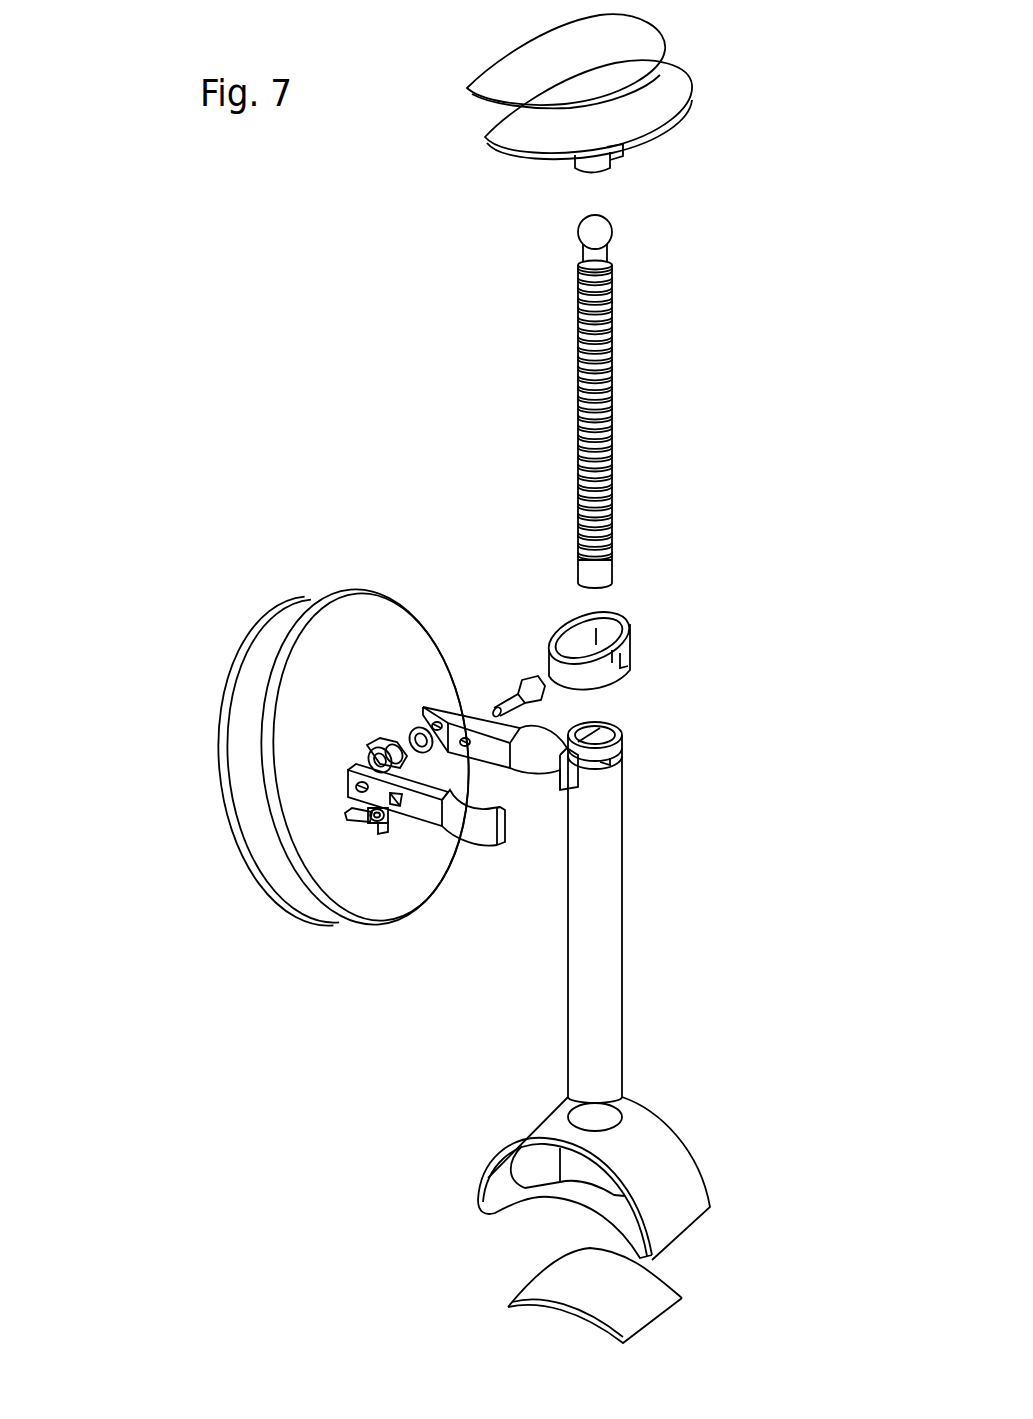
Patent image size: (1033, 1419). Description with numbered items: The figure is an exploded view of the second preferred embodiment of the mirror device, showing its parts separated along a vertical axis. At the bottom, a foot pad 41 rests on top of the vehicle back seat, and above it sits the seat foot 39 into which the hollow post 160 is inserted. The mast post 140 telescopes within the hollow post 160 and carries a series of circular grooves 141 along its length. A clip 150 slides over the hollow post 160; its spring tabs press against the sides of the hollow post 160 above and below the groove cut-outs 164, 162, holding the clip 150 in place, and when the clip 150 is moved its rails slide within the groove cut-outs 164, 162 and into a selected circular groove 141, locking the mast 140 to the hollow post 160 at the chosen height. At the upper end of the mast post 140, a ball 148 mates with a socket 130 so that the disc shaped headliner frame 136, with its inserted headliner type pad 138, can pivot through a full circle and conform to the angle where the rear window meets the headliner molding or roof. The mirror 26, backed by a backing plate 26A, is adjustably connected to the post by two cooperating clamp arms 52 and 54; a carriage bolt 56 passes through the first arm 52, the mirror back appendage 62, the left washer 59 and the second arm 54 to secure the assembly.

The headliner type pad 138 is at (630, 50).
The headliner frame 136 is at (745, 72).
The socket 130 is at (707, 147).
The ball 148 is at (605, 232).
The mast post 140 is at (612, 378).
The circular groove 141 is at (745, 452).
The clip 150 is at (670, 628).
The groove cut-out 164 is at (615, 727).
The groove cut-out 162 is at (603, 765).
The hollow post 160 is at (600, 898).
The seat foot 39 is at (687, 1182).
The foot pad 41 is at (636, 1293).
The mirror 26 is at (228, 745).
The backing plate 26A is at (385, 638).
The carriage bolt 56 is at (505, 690).
The left washer 59 is at (410, 729).
The mirror back appendage 62 is at (373, 742).
The second clamp arm 54 is at (545, 758).
The first clamp arm 52 is at (480, 828).